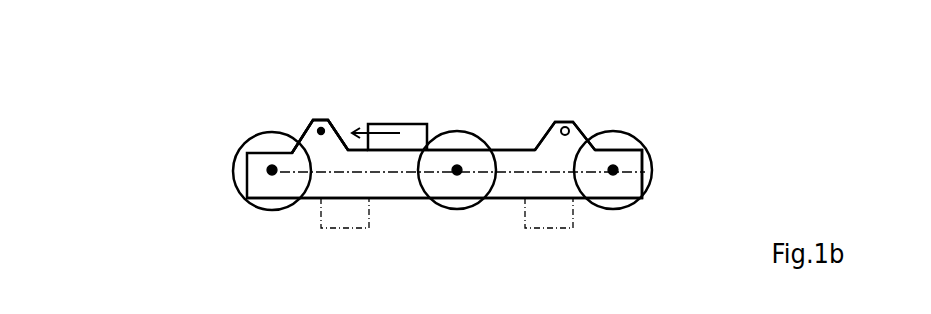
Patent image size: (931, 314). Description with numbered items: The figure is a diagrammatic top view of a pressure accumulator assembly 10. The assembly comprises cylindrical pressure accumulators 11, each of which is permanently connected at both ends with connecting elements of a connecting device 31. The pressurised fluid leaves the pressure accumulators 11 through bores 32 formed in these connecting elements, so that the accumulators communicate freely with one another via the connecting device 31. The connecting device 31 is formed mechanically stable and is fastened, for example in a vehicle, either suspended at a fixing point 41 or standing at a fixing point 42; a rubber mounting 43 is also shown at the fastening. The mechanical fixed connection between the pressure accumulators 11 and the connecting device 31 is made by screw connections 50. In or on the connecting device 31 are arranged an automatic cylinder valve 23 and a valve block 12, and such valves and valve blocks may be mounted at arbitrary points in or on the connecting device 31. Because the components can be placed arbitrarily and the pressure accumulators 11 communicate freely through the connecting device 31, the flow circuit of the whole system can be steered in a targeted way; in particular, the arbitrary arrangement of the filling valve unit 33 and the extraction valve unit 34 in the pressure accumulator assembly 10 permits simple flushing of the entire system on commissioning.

The pressure accumulator assembly 10 is at (175, 64).
The pressure accumulator 11 is at (228, 164).
The valve block 12 is at (413, 116).
The cylinder valve 23 is at (626, 191).
The connecting device 31 is at (513, 143).
The bore 32 is at (515, 174).
The filling valve unit 33 is at (656, 176).
The extraction valve unit 34 is at (326, 151).
The fixing point, suspended design 41 is at (309, 111).
The fixing point, standing design 42 is at (322, 240).
The rubber mounting 43 is at (323, 119).
The screw connection 50 is at (258, 174).